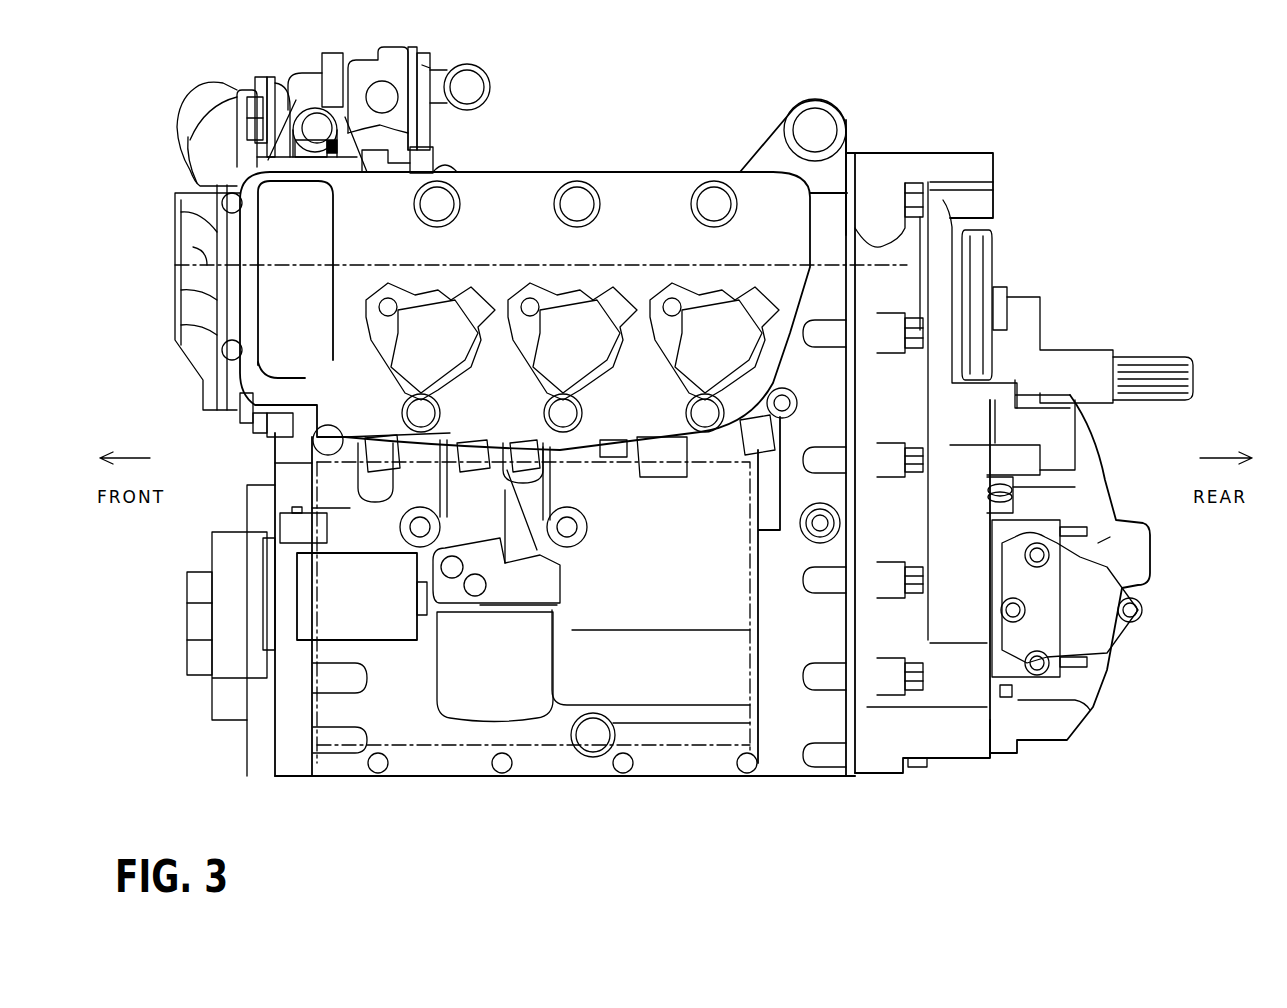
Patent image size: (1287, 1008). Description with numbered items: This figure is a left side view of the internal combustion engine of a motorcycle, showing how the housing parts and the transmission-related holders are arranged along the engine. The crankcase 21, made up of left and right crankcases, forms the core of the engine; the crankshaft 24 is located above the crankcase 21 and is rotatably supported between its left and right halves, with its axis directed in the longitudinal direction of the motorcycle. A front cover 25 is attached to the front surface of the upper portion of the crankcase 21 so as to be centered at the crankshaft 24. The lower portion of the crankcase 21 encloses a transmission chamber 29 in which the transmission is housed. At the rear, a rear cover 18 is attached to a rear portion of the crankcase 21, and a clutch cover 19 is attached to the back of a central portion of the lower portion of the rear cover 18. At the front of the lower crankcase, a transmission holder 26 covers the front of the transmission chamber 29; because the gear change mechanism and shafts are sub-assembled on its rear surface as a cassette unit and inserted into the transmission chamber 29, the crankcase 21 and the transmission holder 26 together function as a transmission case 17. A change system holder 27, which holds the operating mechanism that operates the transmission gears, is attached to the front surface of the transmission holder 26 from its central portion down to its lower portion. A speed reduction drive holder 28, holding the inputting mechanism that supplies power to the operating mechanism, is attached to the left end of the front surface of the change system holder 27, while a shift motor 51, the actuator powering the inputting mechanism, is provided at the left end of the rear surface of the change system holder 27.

The transmission case 17 is at (583, 797).
The rear cover 18 is at (887, 730).
The clutch cover 19 is at (1043, 722).
The crankcase 21 is at (539, 778).
The crankshaft 24 is at (203, 263).
The front cover 25 is at (173, 303).
The transmission holder 26 is at (297, 740).
The change system holder 27 is at (262, 740).
The speed reduction drive holder 28 is at (226, 700).
The transmission chamber 29 is at (663, 551).
The shift motor 51 is at (367, 617).